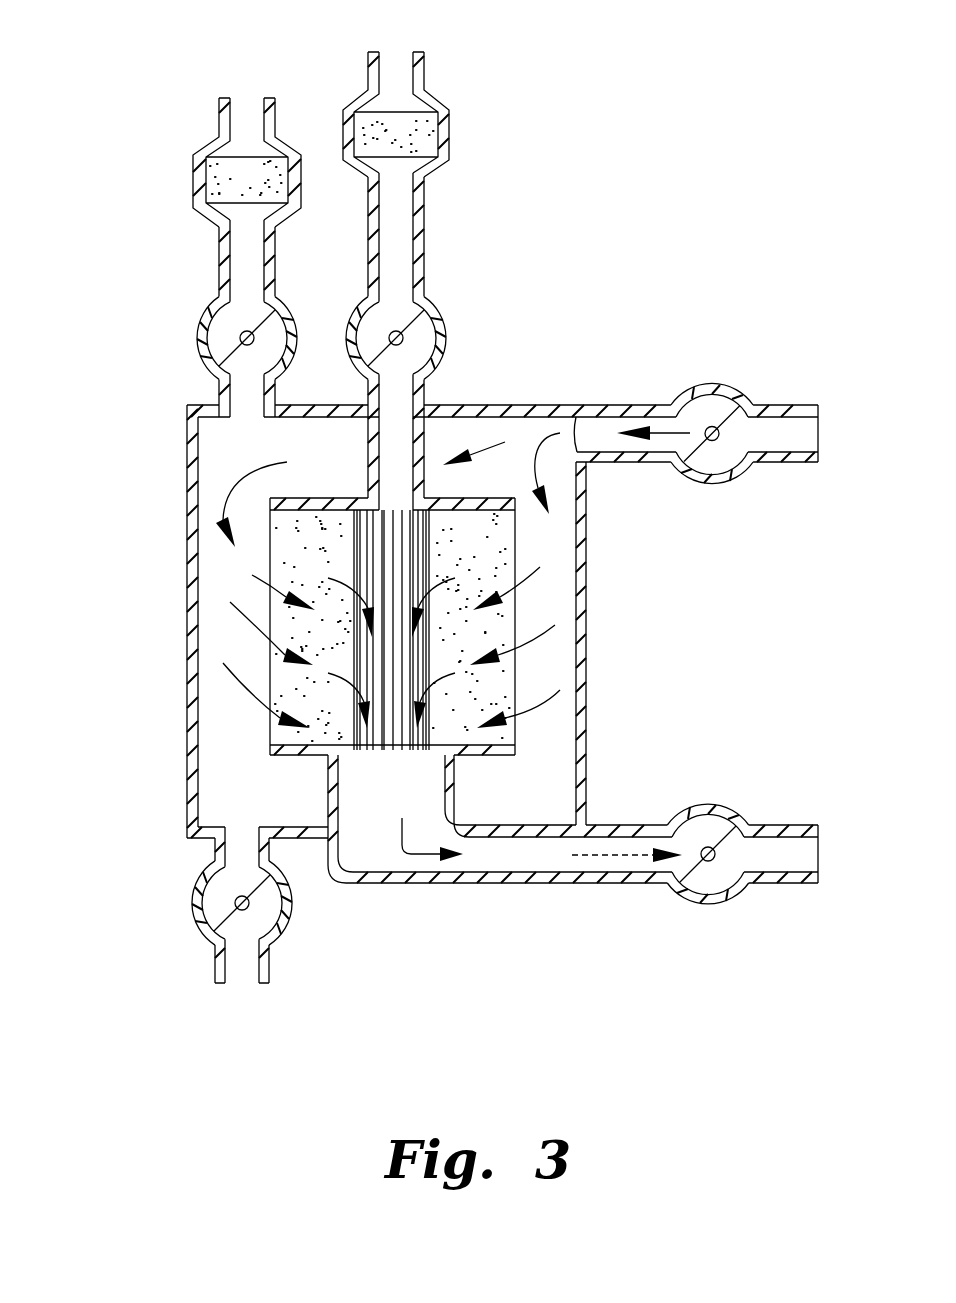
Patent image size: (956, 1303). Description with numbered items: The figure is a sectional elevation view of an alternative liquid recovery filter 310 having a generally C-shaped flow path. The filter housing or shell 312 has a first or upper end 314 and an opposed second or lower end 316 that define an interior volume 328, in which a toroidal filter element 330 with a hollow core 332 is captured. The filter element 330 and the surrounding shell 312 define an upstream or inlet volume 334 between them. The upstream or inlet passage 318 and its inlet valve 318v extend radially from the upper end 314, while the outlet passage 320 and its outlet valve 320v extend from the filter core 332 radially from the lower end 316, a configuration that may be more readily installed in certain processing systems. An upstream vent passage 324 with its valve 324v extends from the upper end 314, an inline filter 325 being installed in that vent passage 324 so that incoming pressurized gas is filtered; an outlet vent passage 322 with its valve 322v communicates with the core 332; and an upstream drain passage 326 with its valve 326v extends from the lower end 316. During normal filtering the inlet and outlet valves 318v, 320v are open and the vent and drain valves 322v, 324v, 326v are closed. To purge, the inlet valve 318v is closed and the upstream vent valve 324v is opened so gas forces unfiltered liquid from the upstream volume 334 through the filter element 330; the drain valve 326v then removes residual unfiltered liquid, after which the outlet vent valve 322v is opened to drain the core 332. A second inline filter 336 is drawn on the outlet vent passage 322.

The liquid recovery filter 310 is at (196, 1066).
The filter housing or shell 312 is at (187, 673).
The first or upper end 314 is at (533, 405).
The second or lower end 316 is at (298, 838).
The upstream or inlet port or passage 318 is at (622, 405).
The inlet valve 318v is at (727, 384).
The downstream or outlet port or passage 320 is at (542, 884).
The outlet valve 320v is at (707, 907).
The outlet vent passage 322 is at (425, 393).
The outlet vent passage valve 322v is at (352, 318).
The upstream vent passage 324 is at (215, 393).
The upstream vent passage valve 324v is at (197, 327).
The inline filter 325 is at (198, 190).
The upstream or inlet side drain passage 326 is at (208, 852).
The upstream drain passage valve 326v is at (202, 930).
The interior volume 328 is at (587, 557).
The toroidal filter element 330 is at (270, 563).
The hollow core 332 is at (397, 750).
The upstream or inlet volume 334 is at (218, 768).
The pre-filter 336 is at (343, 128).